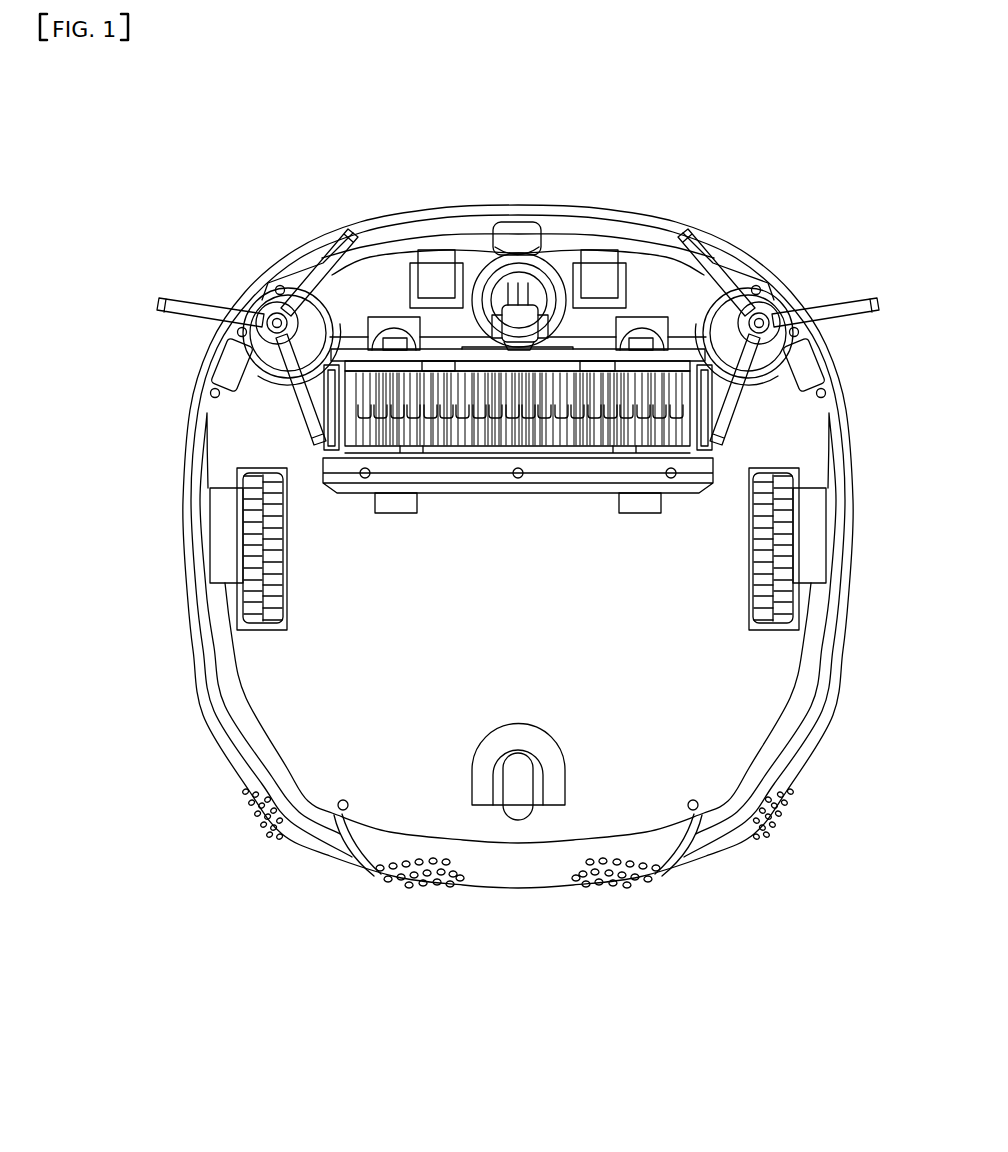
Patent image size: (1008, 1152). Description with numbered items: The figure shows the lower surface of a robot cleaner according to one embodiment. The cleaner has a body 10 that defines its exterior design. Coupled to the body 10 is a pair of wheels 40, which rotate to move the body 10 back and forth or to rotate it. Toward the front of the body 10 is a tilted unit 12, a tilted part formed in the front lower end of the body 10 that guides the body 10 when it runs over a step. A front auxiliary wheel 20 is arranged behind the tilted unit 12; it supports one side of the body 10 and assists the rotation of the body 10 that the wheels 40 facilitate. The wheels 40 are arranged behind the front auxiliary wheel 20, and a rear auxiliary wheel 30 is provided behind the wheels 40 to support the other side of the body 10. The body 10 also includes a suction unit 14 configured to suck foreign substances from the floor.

The body 10 is at (761, 260).
The tilted unit 12 is at (566, 233).
The suction unit 14 is at (318, 262).
The front auxiliary wheel 20 is at (515, 325).
The rear auxiliary wheel 30 is at (518, 787).
The wheel 40 is at (268, 589).